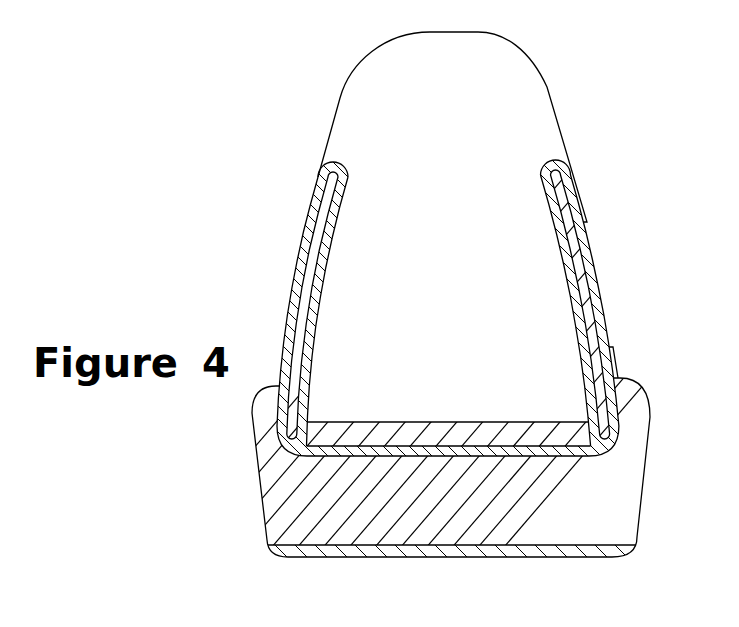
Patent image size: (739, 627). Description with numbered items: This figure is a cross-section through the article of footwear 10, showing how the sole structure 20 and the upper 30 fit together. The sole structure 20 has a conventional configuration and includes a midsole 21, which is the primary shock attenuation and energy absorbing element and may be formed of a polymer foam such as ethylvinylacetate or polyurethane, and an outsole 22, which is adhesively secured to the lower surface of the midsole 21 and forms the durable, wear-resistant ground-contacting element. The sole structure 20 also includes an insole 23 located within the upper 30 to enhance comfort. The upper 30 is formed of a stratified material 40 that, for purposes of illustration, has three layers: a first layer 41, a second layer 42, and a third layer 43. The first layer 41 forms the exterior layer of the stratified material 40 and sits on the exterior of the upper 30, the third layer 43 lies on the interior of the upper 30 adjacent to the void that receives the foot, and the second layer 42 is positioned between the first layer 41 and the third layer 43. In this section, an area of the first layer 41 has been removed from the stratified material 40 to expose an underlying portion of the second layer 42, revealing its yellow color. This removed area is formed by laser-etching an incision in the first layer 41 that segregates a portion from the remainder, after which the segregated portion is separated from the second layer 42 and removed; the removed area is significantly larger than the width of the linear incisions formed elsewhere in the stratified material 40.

The article of footwear 10 is at (596, 79).
The sole structure 20 is at (512, 566).
The midsole 21 is at (633, 481).
The outsole 22 is at (312, 561).
The insole 23 is at (452, 422).
The upper 30 is at (331, 95).
The stratified material 40 is at (586, 173).
The first layer 41 is at (303, 242).
The second layer 42 is at (303, 320).
The third layer 43 is at (338, 244).